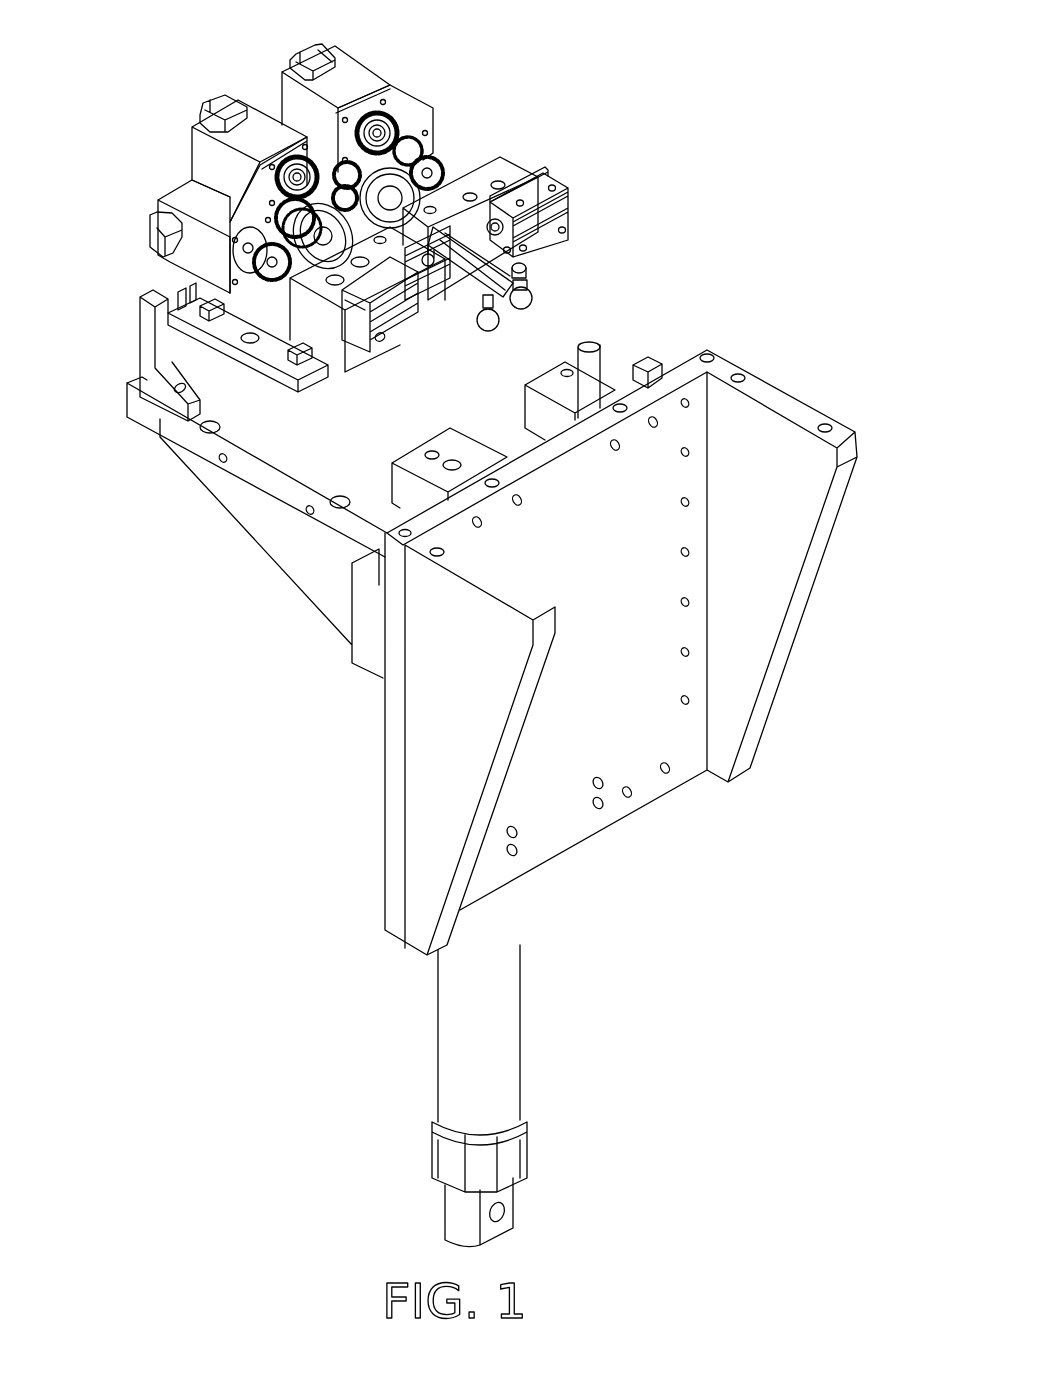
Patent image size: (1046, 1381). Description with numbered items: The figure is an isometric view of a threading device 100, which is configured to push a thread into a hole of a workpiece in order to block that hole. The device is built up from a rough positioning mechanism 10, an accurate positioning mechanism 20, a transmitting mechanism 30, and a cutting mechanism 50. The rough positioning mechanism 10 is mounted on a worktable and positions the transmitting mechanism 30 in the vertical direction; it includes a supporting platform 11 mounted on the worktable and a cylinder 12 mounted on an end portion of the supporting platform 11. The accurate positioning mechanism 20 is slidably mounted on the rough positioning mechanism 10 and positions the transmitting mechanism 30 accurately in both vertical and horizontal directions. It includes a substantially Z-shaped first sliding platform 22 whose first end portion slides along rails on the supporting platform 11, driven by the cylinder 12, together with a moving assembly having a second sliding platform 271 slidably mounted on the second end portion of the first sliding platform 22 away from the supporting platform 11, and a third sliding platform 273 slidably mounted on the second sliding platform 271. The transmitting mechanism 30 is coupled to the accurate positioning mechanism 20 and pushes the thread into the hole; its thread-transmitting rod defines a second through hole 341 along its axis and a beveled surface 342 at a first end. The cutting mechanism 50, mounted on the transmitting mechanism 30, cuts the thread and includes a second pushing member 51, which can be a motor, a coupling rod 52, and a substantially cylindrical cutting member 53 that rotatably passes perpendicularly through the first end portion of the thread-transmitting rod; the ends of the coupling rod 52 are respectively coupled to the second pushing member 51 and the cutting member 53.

The threading device 100 is at (656, 80).
The rough positioning mechanism 10 is at (380, 827).
The supporting platform 11 is at (395, 722).
The cylinder 12 is at (503, 1045).
The accurate positioning mechanism 20 is at (124, 333).
The first sliding platform 22 is at (153, 418).
The second sliding platform 271 is at (200, 348).
The third sliding platform 273 is at (193, 278).
The transmitting mechanism 30 is at (410, 101).
The cutting mechanism 50 is at (667, 185).
The second pushing member 51 is at (562, 216).
The coupling rod 52 is at (500, 263).
The cutting member 53 is at (528, 275).
The second through hole 341 is at (528, 302).
The beveled surface 342 is at (520, 308).